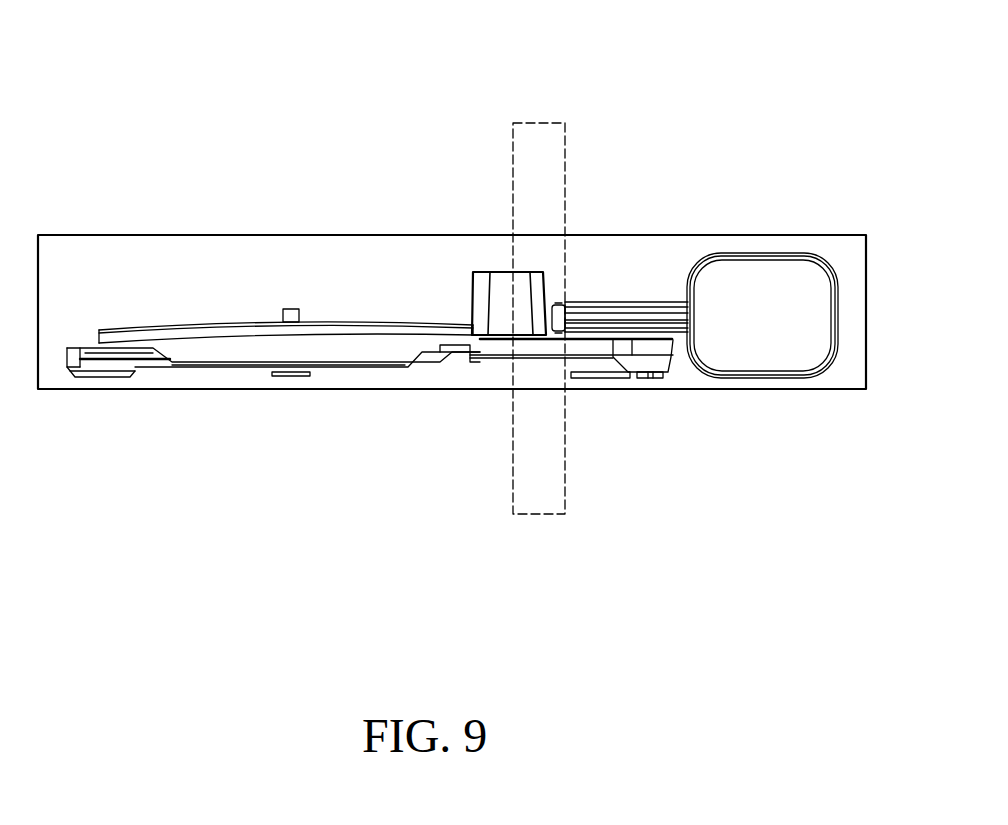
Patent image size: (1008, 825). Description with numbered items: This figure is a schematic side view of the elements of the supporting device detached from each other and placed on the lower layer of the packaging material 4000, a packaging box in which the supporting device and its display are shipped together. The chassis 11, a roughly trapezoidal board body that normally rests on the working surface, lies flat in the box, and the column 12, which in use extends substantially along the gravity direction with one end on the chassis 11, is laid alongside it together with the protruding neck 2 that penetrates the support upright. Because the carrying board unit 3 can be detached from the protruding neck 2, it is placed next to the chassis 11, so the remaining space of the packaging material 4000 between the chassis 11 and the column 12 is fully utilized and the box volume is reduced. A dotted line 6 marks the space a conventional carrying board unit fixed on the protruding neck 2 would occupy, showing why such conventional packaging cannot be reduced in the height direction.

The packaging material 4000 is at (836, 236).
The dotted line 6 is at (538, 130).
The carrying board unit 3 is at (222, 358).
The chassis 11 is at (108, 368).
The protruding neck 2 is at (628, 316).
The column 12 is at (750, 270).